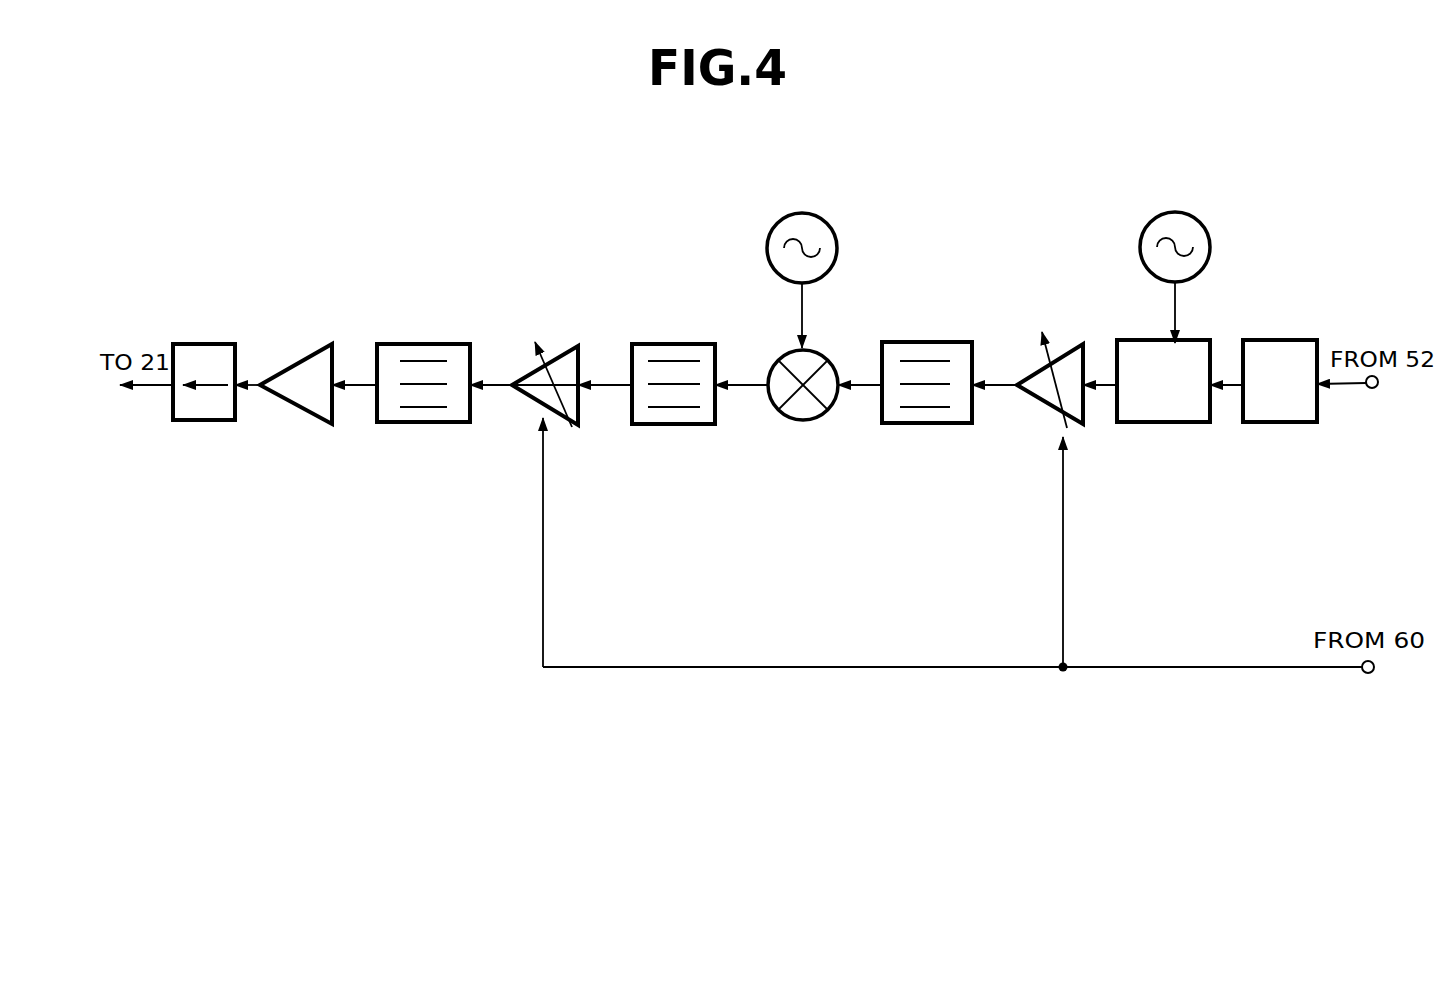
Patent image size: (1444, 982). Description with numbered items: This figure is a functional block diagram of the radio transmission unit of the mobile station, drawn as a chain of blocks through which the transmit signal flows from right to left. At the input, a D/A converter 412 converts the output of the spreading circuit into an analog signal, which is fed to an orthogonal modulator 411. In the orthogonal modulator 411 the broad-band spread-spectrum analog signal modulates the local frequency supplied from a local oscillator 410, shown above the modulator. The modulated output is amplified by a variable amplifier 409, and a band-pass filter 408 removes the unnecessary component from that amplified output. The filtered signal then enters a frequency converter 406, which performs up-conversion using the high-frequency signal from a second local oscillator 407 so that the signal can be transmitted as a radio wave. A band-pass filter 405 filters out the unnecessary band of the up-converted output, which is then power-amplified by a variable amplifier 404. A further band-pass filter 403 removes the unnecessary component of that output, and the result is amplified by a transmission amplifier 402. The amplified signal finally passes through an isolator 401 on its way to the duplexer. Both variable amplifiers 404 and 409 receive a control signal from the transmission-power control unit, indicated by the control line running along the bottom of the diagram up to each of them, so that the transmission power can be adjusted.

The isolator 401 is at (180, 418).
The transmission amplifier 402 is at (283, 352).
The band-pass filter 403 is at (380, 345).
The variable amplifier 404 is at (570, 347).
The band-pass filter 405 is at (642, 427).
The frequency converter 406 is at (790, 414).
The local oscillator 407 is at (780, 220).
The band-pass filter 408 is at (882, 343).
The variable amplifier 409 is at (1023, 347).
The local oscillator 410 is at (1158, 212).
The orthogonal modulator 411 is at (1165, 424).
The D/A converter 412 is at (1292, 424).